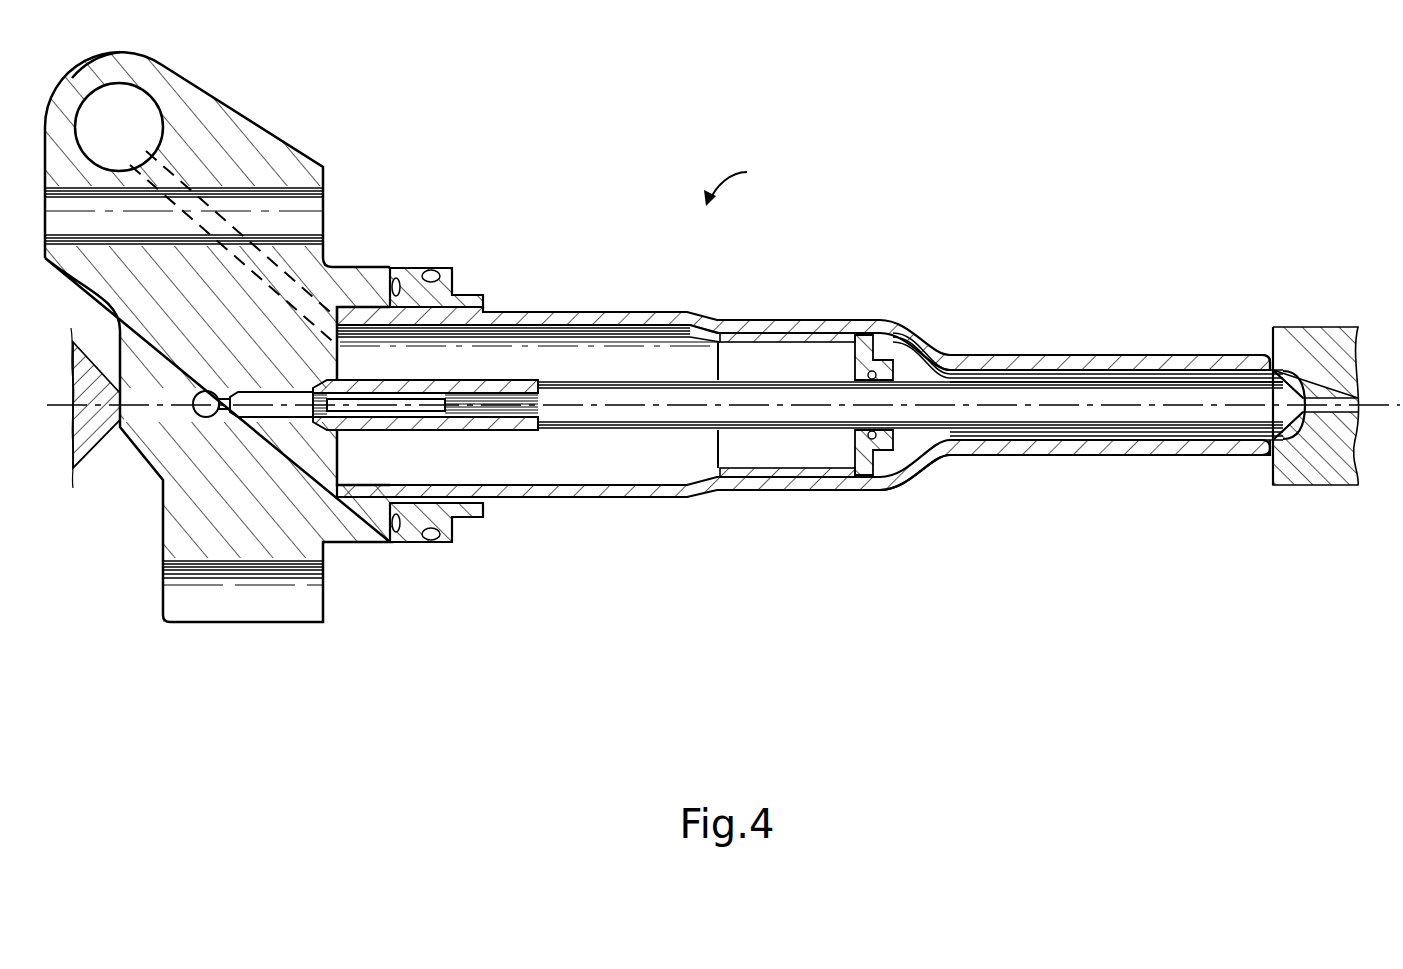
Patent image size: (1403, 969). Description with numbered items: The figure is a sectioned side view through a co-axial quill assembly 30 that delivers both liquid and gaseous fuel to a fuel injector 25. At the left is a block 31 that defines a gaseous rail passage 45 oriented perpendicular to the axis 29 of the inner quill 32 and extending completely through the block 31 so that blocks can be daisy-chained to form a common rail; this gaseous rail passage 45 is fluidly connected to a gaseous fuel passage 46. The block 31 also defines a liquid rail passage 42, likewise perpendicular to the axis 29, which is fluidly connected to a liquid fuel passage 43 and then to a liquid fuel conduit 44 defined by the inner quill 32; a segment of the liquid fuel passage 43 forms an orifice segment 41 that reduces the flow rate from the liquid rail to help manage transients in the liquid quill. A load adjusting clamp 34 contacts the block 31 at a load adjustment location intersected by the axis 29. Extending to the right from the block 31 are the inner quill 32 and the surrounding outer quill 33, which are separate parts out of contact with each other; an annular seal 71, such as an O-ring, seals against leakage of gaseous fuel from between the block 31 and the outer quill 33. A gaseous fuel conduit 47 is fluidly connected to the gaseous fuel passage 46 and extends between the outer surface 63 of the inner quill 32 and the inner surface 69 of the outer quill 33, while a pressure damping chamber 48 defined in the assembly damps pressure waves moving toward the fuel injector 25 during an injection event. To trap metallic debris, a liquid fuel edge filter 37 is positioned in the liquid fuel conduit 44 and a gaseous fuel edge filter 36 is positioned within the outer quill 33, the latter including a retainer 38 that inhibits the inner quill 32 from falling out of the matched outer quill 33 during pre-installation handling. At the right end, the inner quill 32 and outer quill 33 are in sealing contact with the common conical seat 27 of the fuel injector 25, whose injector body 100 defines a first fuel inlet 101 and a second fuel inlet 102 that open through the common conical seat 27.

The fuel injector 25 is at (1272, 474).
The common conical seat 27 is at (1264, 360).
The axis 29 is at (1170, 404).
The co-axial quill assembly 30 is at (740, 182).
The block 31 is at (222, 98).
The inner quill 32 is at (1078, 394).
The outer quill 33 is at (943, 458).
The load adjusting clamp 34 is at (104, 448).
The gaseous fuel edge filter 36 is at (800, 338).
The liquid fuel edge filter 37 is at (400, 402).
The retainer 38 is at (860, 340).
The orifice segment 41 is at (222, 412).
The liquid rail passage 42 is at (200, 418).
The liquid fuel passage 43 is at (275, 418).
The liquid fuel conduit 44 is at (470, 410).
The gaseous rail passage 45 is at (116, 84).
The gaseous fuel passage 46 is at (135, 152).
The gaseous fuel conduit 47 is at (572, 472).
The pressure damping chamber 48 is at (643, 472).
The outer surface 63 is at (1130, 412).
The inner surface 69 is at (655, 326).
The annular seal 71 is at (398, 278).
The injector body 100 is at (1343, 434).
The first fuel inlet 101 is at (1313, 434).
The second fuel inlet 102 is at (1316, 400).